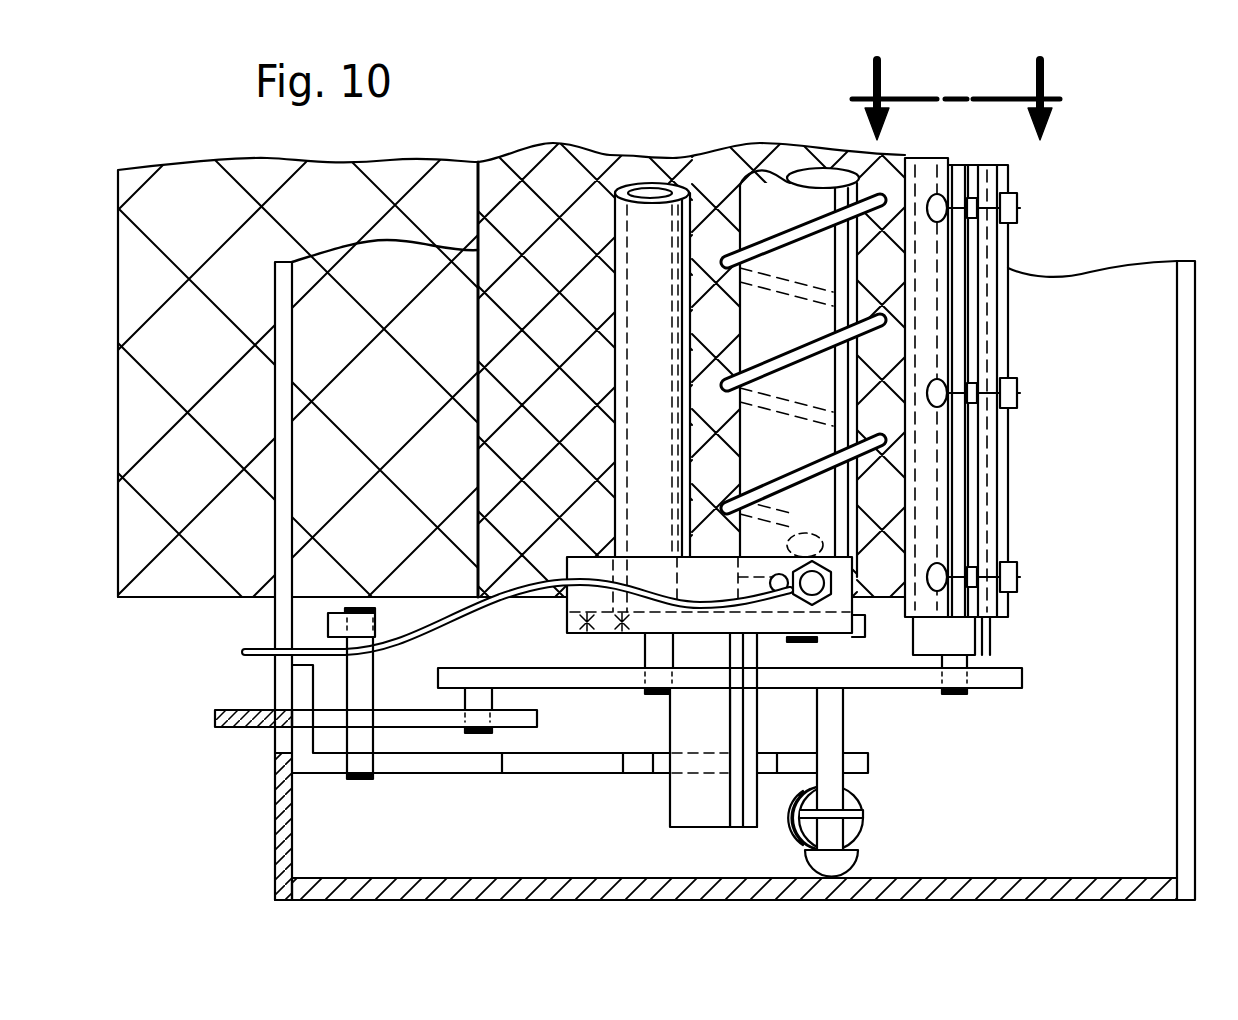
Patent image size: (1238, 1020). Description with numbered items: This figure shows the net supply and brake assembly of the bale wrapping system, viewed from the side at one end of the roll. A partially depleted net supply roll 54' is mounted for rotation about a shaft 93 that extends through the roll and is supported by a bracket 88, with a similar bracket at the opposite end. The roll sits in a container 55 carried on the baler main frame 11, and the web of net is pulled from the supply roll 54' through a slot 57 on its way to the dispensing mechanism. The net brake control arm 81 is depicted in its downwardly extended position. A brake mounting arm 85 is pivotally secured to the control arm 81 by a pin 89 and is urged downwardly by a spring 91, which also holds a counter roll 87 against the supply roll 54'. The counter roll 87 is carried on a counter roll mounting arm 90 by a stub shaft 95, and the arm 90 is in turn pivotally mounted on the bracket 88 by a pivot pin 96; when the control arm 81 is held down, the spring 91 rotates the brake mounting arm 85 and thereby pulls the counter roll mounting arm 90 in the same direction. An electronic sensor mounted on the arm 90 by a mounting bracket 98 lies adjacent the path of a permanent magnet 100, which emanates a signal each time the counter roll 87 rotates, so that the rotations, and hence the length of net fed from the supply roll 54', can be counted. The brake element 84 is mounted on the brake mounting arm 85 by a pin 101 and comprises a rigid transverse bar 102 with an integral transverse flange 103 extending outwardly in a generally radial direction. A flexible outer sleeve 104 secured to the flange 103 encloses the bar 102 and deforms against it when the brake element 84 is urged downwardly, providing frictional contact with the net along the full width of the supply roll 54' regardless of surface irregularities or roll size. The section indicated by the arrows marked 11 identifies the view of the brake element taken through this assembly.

The main frame 11 is at (962, 98).
The partially depleted net supply roll 54' is at (928, 688).
The container 55 is at (278, 846).
The slot 57 is at (282, 630).
The net brake control arm 81 is at (255, 727).
The brake element 84 is at (1038, 233).
The brake mounting arm 85 is at (625, 685).
The counter roll 87 is at (782, 207).
The bracket 88 is at (580, 768).
The pin 89 is at (470, 697).
The counter roll mounting arm 90 is at (447, 633).
The spring 91 is at (660, 655).
The shaft 93 is at (680, 800).
The stub shaft 95 is at (800, 637).
The pivot pin 96 is at (362, 778).
The mounting bracket 98 is at (732, 589).
The permanent magnet 100 is at (778, 583).
The pin 101 is at (963, 695).
The rigid transverse bar 102 is at (993, 640).
The transverse flange 103 is at (970, 545).
The flexible outer sleeve 104 is at (990, 352).